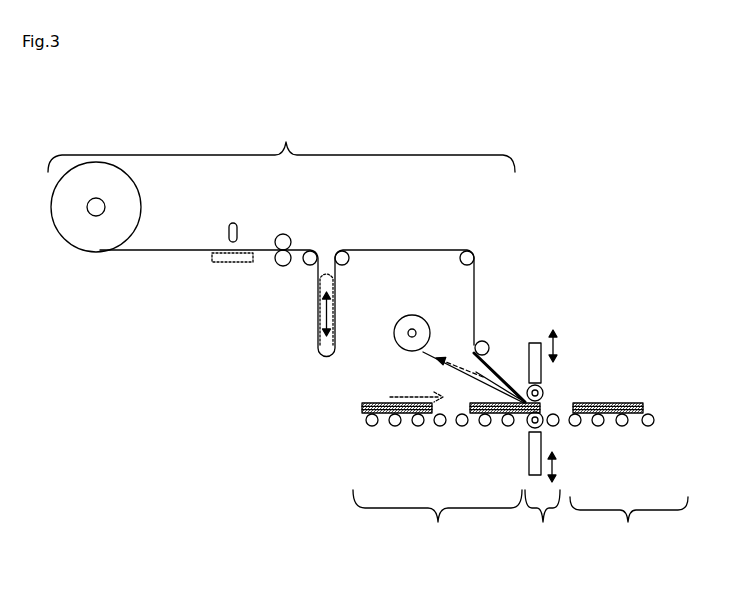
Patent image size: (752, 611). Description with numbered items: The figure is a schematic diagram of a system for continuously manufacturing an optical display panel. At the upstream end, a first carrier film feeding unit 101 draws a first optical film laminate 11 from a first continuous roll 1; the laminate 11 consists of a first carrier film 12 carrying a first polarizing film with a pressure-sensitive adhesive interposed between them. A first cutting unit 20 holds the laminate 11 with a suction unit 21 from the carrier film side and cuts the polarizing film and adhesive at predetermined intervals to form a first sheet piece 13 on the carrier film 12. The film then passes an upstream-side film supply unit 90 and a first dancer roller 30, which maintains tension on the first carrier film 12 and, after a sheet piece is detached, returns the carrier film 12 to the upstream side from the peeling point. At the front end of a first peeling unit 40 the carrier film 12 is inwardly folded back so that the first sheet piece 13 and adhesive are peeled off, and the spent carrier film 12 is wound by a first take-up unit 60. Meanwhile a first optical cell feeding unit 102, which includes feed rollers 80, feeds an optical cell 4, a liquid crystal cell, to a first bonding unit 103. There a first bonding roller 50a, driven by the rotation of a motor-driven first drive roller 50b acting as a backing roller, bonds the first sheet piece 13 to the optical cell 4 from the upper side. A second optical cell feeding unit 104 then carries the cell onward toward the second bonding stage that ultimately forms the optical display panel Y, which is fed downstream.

The first carrier film feeding unit 101 is at (281, 145).
The first continuous roll 1 is at (67, 231).
The first optical film laminate 11 is at (155, 246).
The first cutting unit 20 is at (233, 222).
The suction unit 21 is at (218, 262).
The upstream-side film supply unit 90 is at (307, 236).
The first dancer roller 30 is at (315, 322).
The first take-up unit 60 is at (410, 330).
The first carrier film 12 is at (418, 361).
The first peeling unit 40 is at (498, 376).
The optical cell 4 is at (362, 404).
The first sheet piece 13 is at (622, 402).
The optical display panel Y is at (644, 396).
The first bonding roller 50a is at (546, 391).
The first drive roller 50b is at (528, 425).
The feed rollers 80 is at (372, 436).
The first optical cell feeding unit 102 is at (437, 520).
The first bonding unit 103 is at (545, 520).
The second optical cell feeding unit 104 is at (629, 523).